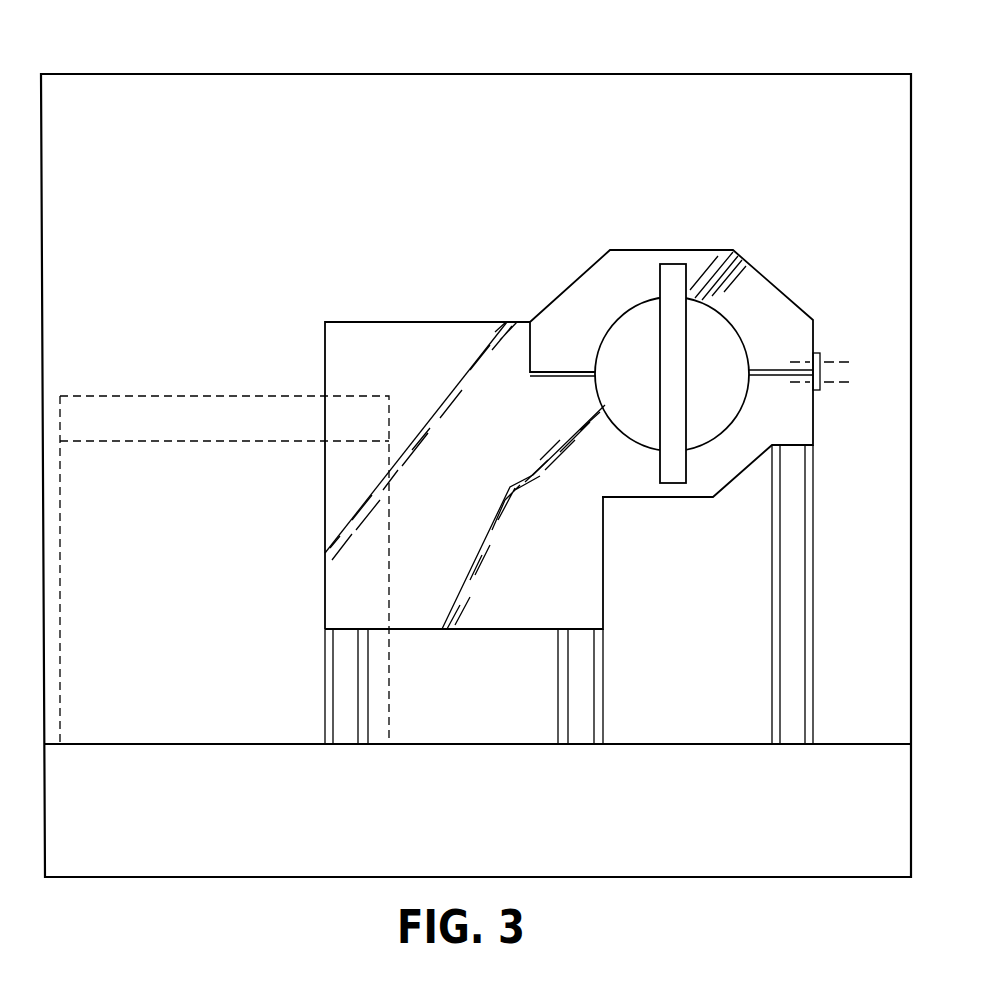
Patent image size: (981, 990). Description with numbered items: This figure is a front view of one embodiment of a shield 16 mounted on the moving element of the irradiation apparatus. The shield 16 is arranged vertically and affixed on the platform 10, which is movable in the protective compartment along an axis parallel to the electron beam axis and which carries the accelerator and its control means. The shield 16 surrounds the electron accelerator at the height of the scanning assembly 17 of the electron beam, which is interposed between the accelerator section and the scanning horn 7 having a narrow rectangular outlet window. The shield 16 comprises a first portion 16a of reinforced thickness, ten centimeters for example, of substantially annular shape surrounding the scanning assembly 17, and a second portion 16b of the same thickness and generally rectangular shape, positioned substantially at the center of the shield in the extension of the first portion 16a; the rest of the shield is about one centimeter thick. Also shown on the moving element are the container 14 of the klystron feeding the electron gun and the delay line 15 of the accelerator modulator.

The shield 16 is at (446, 73).
The first portion of the shield 16a is at (597, 262).
The second portion of the shield 16b is at (445, 322).
The scanning assembly 17 is at (717, 310).
The scanning horn 7 is at (687, 404).
The container of a klystron 14 is at (139, 441).
The delay line 15 is at (198, 396).
The platform 10 is at (452, 744).